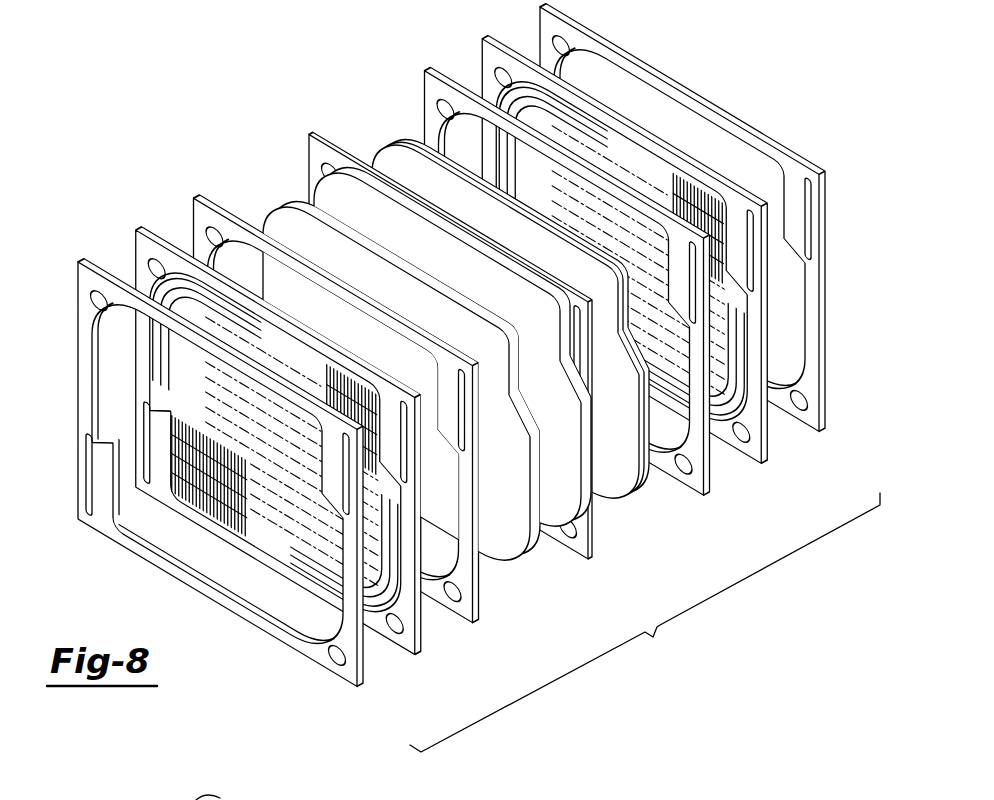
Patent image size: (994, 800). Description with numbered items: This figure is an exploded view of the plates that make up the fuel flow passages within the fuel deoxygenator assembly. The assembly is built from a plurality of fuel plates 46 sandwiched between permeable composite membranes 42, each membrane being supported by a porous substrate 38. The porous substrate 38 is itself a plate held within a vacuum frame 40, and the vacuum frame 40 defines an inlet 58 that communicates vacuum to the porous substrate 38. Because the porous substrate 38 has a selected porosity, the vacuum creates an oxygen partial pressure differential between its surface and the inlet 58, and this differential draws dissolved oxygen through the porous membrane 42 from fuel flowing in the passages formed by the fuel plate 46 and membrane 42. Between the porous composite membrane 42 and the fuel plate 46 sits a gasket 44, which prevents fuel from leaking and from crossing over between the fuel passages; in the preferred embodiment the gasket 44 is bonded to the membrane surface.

The porous substrate 38 is at (463, 355).
The vacuum frame 40 is at (598, 538).
The permeable composite membrane 42 is at (628, 508).
The gasket 44 is at (829, 412).
The fuel plate 46 is at (769, 444).
The inlet 58 is at (314, 171).